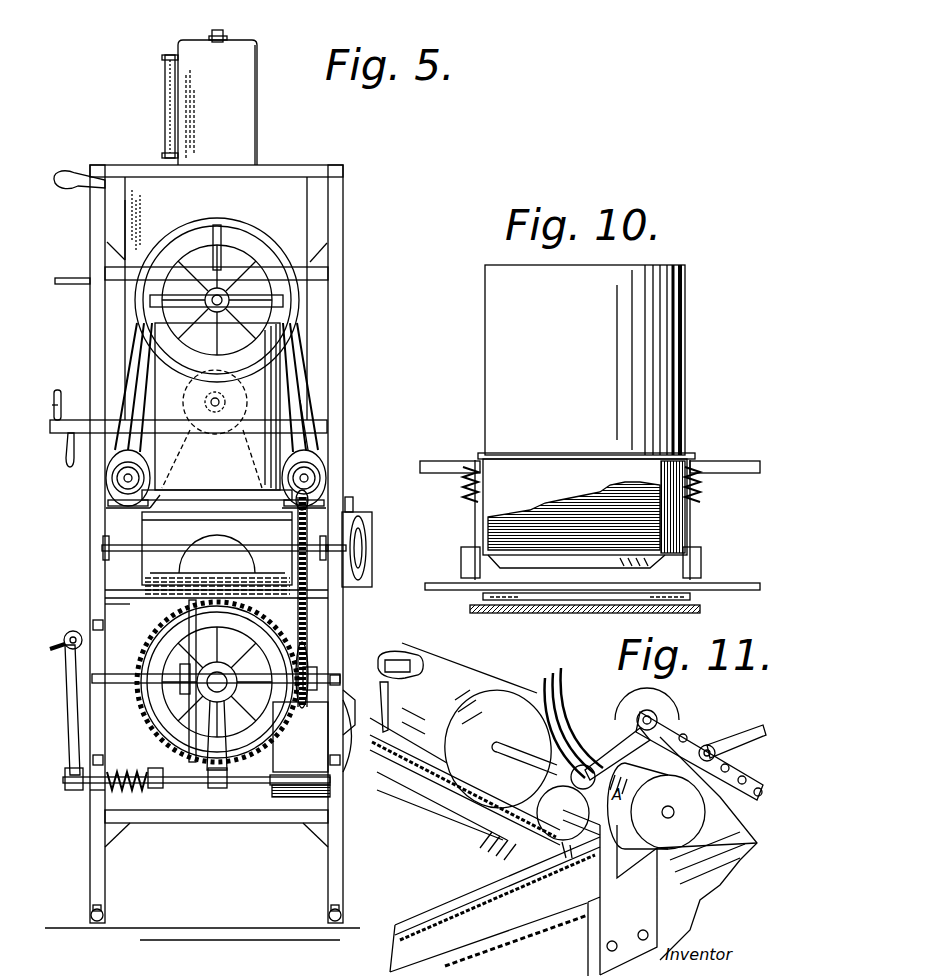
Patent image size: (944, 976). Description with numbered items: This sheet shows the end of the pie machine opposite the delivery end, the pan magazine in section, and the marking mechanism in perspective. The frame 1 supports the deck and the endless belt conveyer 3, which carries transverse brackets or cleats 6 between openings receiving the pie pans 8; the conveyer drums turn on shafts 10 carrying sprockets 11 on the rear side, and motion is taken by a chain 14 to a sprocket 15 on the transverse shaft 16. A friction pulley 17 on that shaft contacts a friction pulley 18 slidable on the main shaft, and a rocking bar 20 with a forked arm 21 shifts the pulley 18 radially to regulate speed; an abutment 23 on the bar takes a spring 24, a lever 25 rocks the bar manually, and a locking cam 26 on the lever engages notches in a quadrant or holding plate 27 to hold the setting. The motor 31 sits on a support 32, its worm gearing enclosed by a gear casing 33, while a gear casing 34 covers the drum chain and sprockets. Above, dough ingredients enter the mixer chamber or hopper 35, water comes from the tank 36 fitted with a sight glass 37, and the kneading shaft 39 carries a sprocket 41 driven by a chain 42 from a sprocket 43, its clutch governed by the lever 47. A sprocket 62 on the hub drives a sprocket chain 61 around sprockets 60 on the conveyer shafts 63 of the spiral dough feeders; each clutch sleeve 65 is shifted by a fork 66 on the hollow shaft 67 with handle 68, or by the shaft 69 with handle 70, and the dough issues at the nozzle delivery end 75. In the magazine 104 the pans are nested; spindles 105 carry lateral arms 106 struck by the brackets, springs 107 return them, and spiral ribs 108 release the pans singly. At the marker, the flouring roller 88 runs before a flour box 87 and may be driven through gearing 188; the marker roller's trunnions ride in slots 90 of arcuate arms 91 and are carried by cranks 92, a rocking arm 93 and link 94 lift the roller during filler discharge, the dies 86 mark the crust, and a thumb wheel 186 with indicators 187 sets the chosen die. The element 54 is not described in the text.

In FIG. 5, the frame 1 is at (343, 268).
In FIG. 5, the endless belt conveyer 3 is at (115, 590).
In FIG. 10, the endless belt conveyer 3 is at (700, 582).
In FIG. 11, the endless belt conveyer 3 is at (440, 905).
In FIG. 5, the brackets or cleats 6 is at (175, 520).
In FIG. 10, the brackets or cleats 6 is at (580, 605).
In FIG. 11, the brackets or cleats 6 is at (480, 820).
In FIG. 5, the pie pans 8 is at (205, 512).
In FIG. 10, the pie pans 8 is at (620, 565).
In FIG. 5, the axles or shafts 10 is at (108, 560).
In FIG. 5, the sprockets 11 is at (368, 530).
In FIG. 5, the chain 14 is at (310, 605).
In FIG. 5, the sprocket 15 is at (345, 715).
In FIG. 11, the sprocket 15 is at (384, 707).
In FIG. 5, the transverse shaft 16 is at (128, 690).
In FIG. 5, the friction pulley 17 is at (185, 730).
In FIG. 5, the friction pulley 18 is at (300, 650).
In FIG. 5, the rocking bar 20 is at (215, 788).
In FIG. 5, the forked arm 21 is at (222, 722).
In FIG. 5, the abutment or shoulder 23 is at (135, 790).
In FIG. 5, the spring 24 is at (120, 790).
In FIG. 5, the lever 25 is at (68, 720).
In FIG. 5, the locking cam or eccentric 26 is at (73, 630).
In FIG. 5, the quadrant or holding plate 27 is at (55, 648).
In FIG. 5, the motor 31 is at (312, 736).
In FIG. 5, the support 32 is at (290, 815).
In FIG. 5, the gear casing 33 is at (311, 699).
In FIG. 5, the gear casing 34 is at (372, 567).
In FIG. 5, the mixer chamber or hopper 35 is at (211, 220).
In FIG. 5, the tank 36 is at (258, 112).
In FIG. 5, the sight glass or gage tube 37 is at (165, 100).
In FIG. 5, the mixing or kneading shaft 39 is at (216, 273).
In FIG. 5, the sprocket 41 is at (215, 220).
In FIG. 5, the chain 42 is at (297, 340).
In FIG. 5, the sprocket 43 is at (265, 770).
In FIG. 5, the lever 47 is at (60, 278).
In FIG. 5, the handle 54 is at (65, 178).
In FIG. 5, the sprockets 60 is at (110, 492).
In FIG. 5, the sprocket chain 61 is at (300, 395).
In FIG. 5, the sprocket 62 is at (250, 250).
In FIG. 5, the conveyer shafts 63 is at (115, 500).
In FIG. 5, the clutch sleeve 65 is at (120, 485).
In FIG. 5, the fork 66 is at (115, 462).
In FIG. 5, the hollow shaft 67 is at (70, 420).
In FIG. 5, the handle or lever 68 is at (66, 452).
In FIG. 5, the shaft 69 is at (320, 420).
In FIG. 11, the shaft 69 is at (480, 685).
In FIG. 5, the lever or handle member 70 is at (39, 407).
In FIG. 5, the delivery end of the nozzle 75 is at (235, 555).
In FIG. 11, the dies or marker elements 86 is at (420, 668).
In FIG. 11, the box 87 is at (590, 835).
In FIG. 11, the flouring roller 88 is at (545, 840).
In FIG. 11, the slots 90 is at (560, 680).
In FIG. 11, the arcuate arms 91 is at (580, 700).
In FIG. 11, the cranks 92 is at (600, 745).
In FIG. 11, the crank or rocking arm 93 is at (660, 710).
In FIG. 11, the link 94 is at (740, 730).
In FIG. 5, the magazine or holder 104 is at (215, 385).
In FIG. 10, the magazine or holder 104 is at (586, 362).
In FIG. 5, the spindles 105 is at (152, 500).
In FIG. 10, the spindles 105 is at (470, 490).
In FIG. 10, the lateral arms 106 is at (495, 572).
In FIG. 10, the springs 107 is at (465, 470).
In FIG. 10, the spirally disposed ribs 108 is at (465, 575).
In FIG. 11, the index or thumb wheel 186 is at (700, 830).
In FIG. 11, the indicators 187 is at (656, 806).
In FIG. 5, the gearing 188 is at (353, 500).